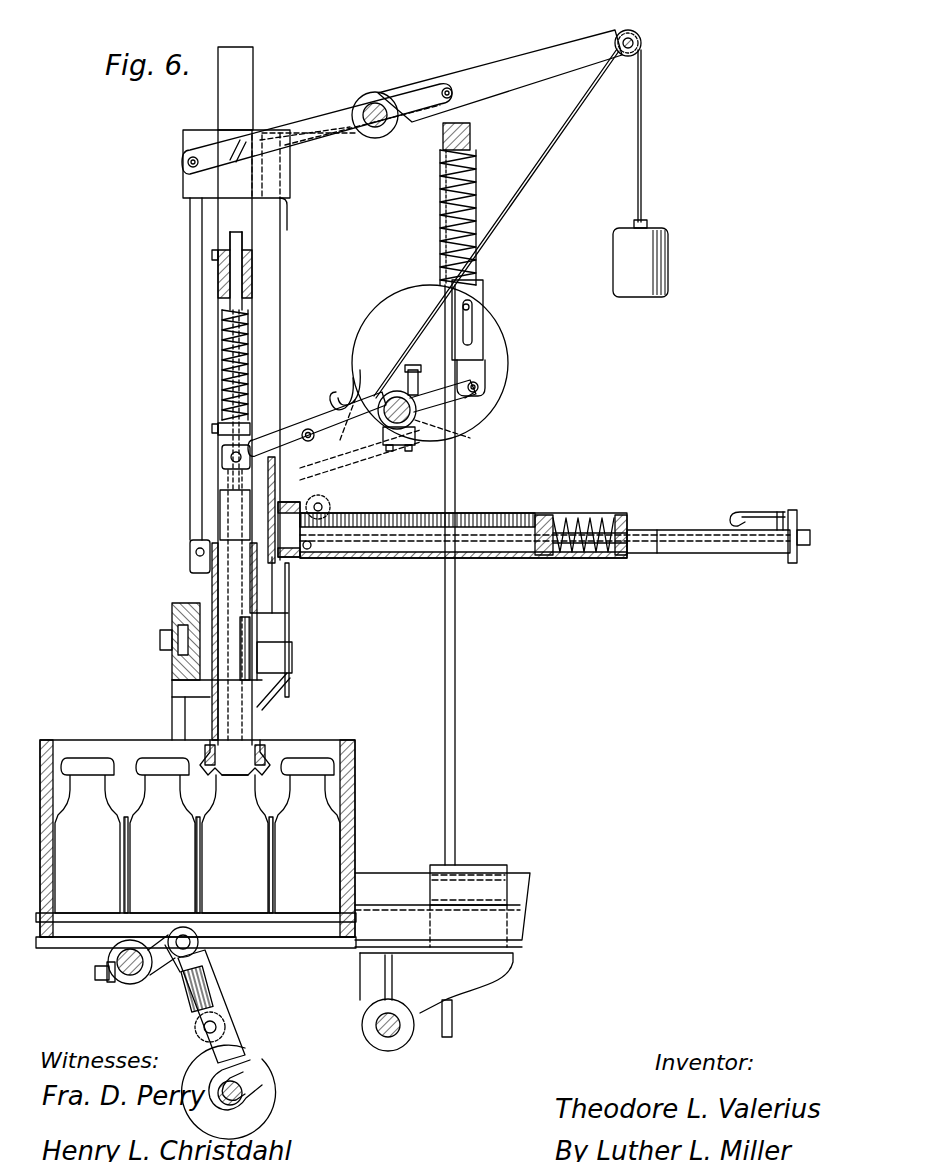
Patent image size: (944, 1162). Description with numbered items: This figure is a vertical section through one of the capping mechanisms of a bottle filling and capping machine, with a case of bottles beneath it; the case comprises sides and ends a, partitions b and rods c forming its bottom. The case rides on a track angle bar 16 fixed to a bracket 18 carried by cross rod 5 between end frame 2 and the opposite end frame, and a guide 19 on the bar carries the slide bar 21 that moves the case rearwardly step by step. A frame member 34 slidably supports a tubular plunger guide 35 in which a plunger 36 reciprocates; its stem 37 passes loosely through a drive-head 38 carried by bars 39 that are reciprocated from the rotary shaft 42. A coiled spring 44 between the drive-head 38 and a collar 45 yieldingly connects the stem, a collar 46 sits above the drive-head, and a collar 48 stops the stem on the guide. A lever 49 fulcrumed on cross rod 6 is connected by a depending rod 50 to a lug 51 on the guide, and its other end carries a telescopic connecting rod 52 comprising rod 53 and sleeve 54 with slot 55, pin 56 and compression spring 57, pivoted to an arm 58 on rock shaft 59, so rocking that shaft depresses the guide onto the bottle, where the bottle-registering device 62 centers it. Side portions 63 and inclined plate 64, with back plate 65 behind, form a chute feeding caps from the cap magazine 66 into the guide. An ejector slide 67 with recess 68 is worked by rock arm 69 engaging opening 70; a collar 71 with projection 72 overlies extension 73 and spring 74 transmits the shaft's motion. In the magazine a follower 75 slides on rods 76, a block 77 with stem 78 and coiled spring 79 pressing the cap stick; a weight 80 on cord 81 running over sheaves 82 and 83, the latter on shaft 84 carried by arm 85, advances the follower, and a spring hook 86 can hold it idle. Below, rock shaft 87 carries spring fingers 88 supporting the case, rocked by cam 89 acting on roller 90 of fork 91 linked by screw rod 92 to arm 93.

The end frame 2 is at (456, 680).
The cross rod 5 is at (385, 1036).
The cross rod 6 is at (376, 103).
The angle bar 16 is at (520, 926).
The bracket 18 is at (462, 986).
The guide 19 is at (476, 866).
The slide bar 21 is at (525, 893).
The frame member 34 is at (172, 663).
The plunger guide 35 is at (200, 697).
The plunger 36 is at (220, 500).
The stem 37 is at (253, 281).
The drive-head 38 is at (218, 285).
The bar 39 is at (218, 101).
The rotary shaft 42 is at (242, 1100).
The coiled spring 44 is at (222, 348).
The collar 45 is at (218, 430).
The collar 46 is at (245, 253).
The collar 48 is at (222, 455).
The lever 49 is at (318, 118).
The depending rod 50 is at (190, 233).
The lug 51 is at (190, 565).
The telescopic connecting rod 52 is at (424, 217).
The rod 53 is at (472, 185).
The sleeve 54 is at (480, 292).
The slot 55 is at (476, 330).
The pin 56 is at (472, 308).
The compression spring 57 is at (445, 182).
The arm 58 is at (440, 385).
The rock shaft 59 is at (392, 428).
The bottle-registering device 62 is at (276, 748).
The side portion 63 is at (272, 657).
The inclined plate 64 is at (280, 702).
The back plate 65 is at (290, 626).
The cap magazine 66 is at (412, 558).
The ejector slide 67 is at (260, 510).
The recess 68 is at (289, 581).
The rock arm 69 is at (337, 418).
The opening 70 is at (275, 430).
The collar 71 is at (384, 385).
The projection 72 is at (470, 404).
The rearward extension 73 is at (440, 426).
The spring 74 is at (400, 292).
The follower 75 is at (600, 515).
The rod 76 is at (688, 532).
The block 77 is at (543, 515).
The stem 78 is at (626, 530).
The coiled spring 79 is at (599, 556).
The weight 80 is at (645, 298).
The cord 81 is at (522, 180).
The guide sheave 82 is at (330, 505).
The guide sheave 83 is at (629, 50).
The shaft 84 is at (631, 40).
The arm 85 is at (531, 62).
The spring hook 86 is at (756, 512).
The rock shaft 87 is at (131, 985).
The spring finger 88 is at (200, 940).
The cam 89 is at (274, 1095).
The roller 90 is at (218, 1022).
The fork 91 is at (258, 1067).
The screw rod 92 is at (176, 970).
The arm 93 is at (170, 985).
The sides and ends a is at (97, 748).
The partition b is at (195, 862).
The rod c is at (298, 914).